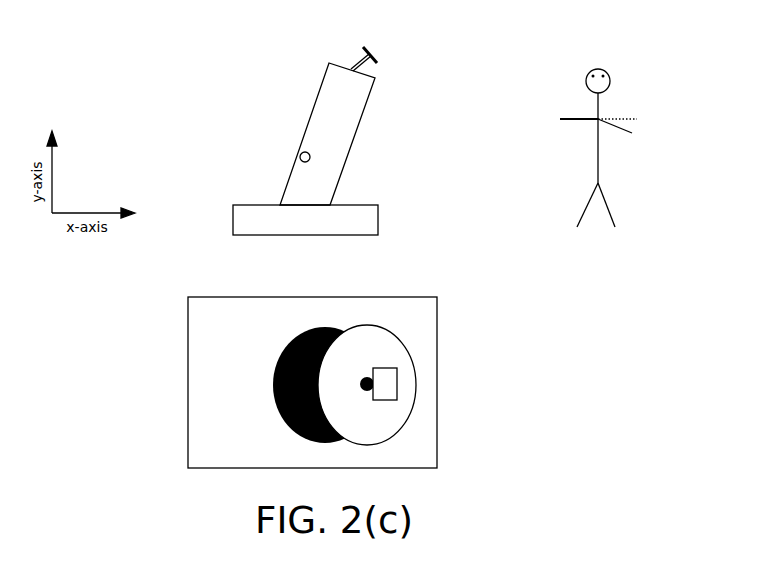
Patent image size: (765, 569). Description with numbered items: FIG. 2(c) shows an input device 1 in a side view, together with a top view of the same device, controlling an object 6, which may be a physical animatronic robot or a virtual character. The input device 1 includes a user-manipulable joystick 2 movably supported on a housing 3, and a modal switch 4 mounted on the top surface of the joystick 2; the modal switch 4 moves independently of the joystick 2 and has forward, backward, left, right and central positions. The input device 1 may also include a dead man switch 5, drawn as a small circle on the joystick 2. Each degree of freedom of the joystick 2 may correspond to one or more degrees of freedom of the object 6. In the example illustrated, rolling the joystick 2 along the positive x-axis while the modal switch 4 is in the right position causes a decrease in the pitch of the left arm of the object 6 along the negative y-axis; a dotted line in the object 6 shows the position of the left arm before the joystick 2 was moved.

The input device 1 is at (246, 64).
The joystick 2 is at (341, 135).
The housing 3 is at (355, 218).
The modal switch 4 is at (378, 57).
The dead man switch 5 is at (298, 152).
The object 6 is at (654, 46).